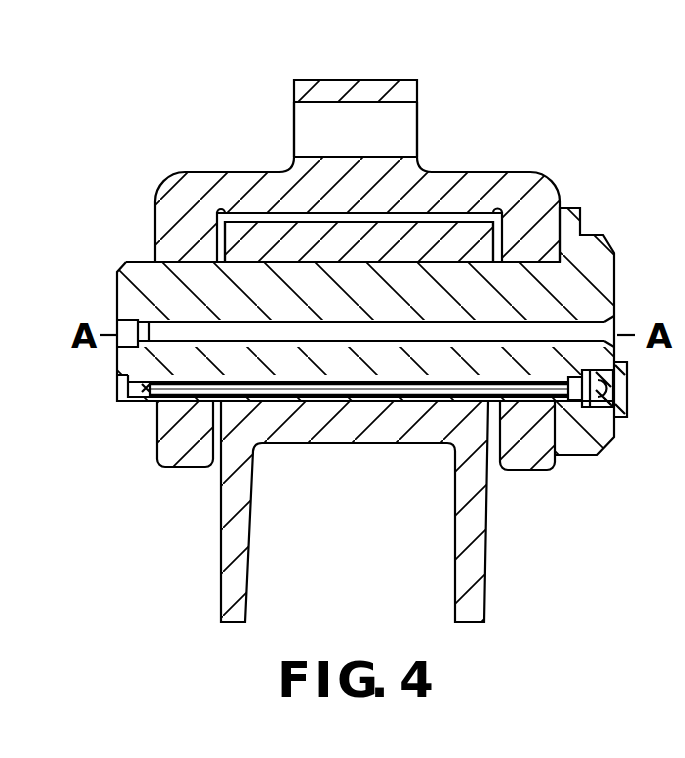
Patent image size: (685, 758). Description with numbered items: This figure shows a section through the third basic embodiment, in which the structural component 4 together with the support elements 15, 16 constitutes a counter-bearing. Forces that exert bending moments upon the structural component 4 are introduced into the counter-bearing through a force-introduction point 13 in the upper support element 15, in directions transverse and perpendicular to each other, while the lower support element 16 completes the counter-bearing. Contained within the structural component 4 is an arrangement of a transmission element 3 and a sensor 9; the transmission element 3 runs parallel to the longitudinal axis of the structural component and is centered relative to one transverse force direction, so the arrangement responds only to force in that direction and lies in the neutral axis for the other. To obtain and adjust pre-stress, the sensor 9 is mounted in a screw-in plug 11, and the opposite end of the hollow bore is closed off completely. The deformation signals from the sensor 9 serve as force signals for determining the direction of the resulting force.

The transmission element 3 is at (204, 388).
The structural component 4 is at (413, 282).
The sensor 9 is at (624, 393).
The screw-in plug 11 is at (616, 414).
The force-introduction point 13 is at (357, 110).
The support element 15 is at (538, 193).
The support element 16 is at (311, 424).